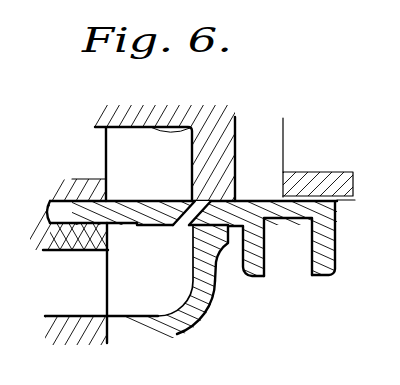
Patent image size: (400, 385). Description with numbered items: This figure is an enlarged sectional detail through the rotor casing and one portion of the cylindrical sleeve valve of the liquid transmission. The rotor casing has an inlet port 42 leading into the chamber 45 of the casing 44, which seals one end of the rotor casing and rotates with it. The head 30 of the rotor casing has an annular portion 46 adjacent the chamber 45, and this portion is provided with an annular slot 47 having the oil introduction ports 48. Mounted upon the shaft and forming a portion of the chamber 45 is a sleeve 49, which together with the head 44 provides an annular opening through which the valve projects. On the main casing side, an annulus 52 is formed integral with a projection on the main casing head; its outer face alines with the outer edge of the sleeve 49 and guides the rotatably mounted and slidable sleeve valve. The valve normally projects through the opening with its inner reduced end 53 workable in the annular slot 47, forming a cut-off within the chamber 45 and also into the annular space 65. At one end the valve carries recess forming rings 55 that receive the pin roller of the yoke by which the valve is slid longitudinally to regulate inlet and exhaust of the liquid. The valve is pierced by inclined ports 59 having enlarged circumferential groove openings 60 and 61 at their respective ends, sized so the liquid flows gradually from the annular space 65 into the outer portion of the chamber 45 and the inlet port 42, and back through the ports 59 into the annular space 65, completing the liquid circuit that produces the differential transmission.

The head of the rotor casing 30 is at (63, 316).
The inlet port 42 is at (100, 309).
The casing 44 is at (201, 320).
The chamber 45 is at (214, 298).
The annular portion 46 is at (80, 178).
The annular slot 47 is at (70, 210).
The oil introduction ports 48 is at (62, 251).
The sleeve 49 is at (195, 128).
The annulus 52 is at (308, 172).
The inner reduced end 53 is at (88, 256).
The recess forming rings 55 is at (323, 272).
The inclined ports 59 is at (198, 204).
The circumferential groove opening 60 is at (197, 243).
The circumferential groove opening 61 is at (157, 226).
The annular space 65 is at (276, 144).